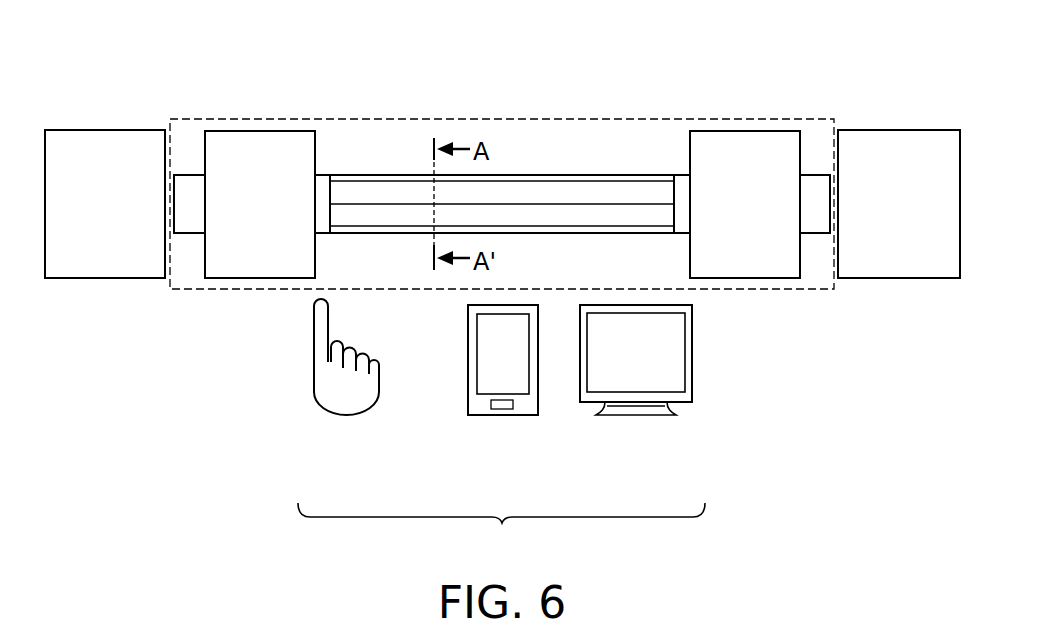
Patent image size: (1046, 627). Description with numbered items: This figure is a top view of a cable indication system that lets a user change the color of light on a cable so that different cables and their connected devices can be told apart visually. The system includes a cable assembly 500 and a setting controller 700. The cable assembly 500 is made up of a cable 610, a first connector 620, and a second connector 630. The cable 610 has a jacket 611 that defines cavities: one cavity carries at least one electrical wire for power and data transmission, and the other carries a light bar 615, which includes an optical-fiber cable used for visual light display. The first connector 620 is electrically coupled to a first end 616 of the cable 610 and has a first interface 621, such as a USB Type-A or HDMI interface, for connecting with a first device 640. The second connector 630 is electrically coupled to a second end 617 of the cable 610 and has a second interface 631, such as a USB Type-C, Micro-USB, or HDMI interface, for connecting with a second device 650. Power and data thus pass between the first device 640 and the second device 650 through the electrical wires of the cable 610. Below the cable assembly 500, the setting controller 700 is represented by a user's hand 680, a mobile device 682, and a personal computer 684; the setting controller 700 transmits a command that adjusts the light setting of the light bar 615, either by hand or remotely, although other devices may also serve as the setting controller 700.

The cable assembly 500 is at (610, 119).
The cable 610 is at (503, 175).
The jacket 611 is at (411, 179).
The light bar 615 is at (553, 218).
The first end 616 is at (350, 175).
The second end 617 is at (668, 175).
The first connector 620 is at (262, 131).
The first interface 621 is at (190, 175).
The second connector 630 is at (747, 131).
The second interface 631 is at (815, 175).
The first device 640 is at (107, 130).
The second device 650 is at (902, 130).
The user's hand 680 is at (346, 415).
The mobile device 682 is at (500, 415).
The personal computer 684 is at (636, 415).
The setting controller 700 is at (501, 531).